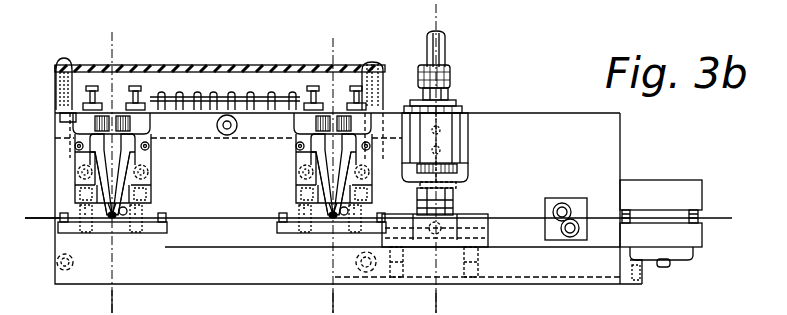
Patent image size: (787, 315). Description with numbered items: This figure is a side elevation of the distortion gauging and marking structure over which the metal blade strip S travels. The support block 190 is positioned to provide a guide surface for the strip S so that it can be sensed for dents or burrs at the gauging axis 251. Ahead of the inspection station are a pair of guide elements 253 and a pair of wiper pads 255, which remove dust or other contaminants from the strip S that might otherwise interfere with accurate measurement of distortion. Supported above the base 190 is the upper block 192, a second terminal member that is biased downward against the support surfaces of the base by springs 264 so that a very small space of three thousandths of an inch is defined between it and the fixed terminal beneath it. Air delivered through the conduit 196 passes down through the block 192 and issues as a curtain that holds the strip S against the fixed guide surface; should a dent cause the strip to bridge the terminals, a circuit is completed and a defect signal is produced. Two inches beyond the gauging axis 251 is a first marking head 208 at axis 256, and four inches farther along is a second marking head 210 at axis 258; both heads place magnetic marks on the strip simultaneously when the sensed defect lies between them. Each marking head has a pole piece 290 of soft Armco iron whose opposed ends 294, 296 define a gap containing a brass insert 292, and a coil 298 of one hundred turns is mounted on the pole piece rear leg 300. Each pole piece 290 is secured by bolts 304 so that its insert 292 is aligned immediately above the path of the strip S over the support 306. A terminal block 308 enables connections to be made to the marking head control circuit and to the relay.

The conduit 196 is at (446, 45).
The springs 264 is at (457, 186).
The upper block 192 is at (457, 198).
The base 190 is at (480, 228).
The guide elements 253 is at (576, 192).
The wiper pads 255 is at (663, 192).
The axis 251 is at (436, 298).
The axis 256 is at (333, 298).
The axis 258 is at (112, 295).
The coil 298 is at (118, 110).
The terminal block 308 is at (191, 96).
The pole piece rear leg 300 is at (148, 129).
The bolts 304 is at (74, 146).
The pole piece 290 is at (146, 162).
The marking head 210 is at (64, 163).
The marking head 208 is at (289, 163).
The support 306 is at (60, 232).
The opposed end of the core 294 is at (116, 231).
The brass insert 292 is at (117, 235).
The opposed end of the core 296 is at (125, 230).
The strip S is at (43, 222).